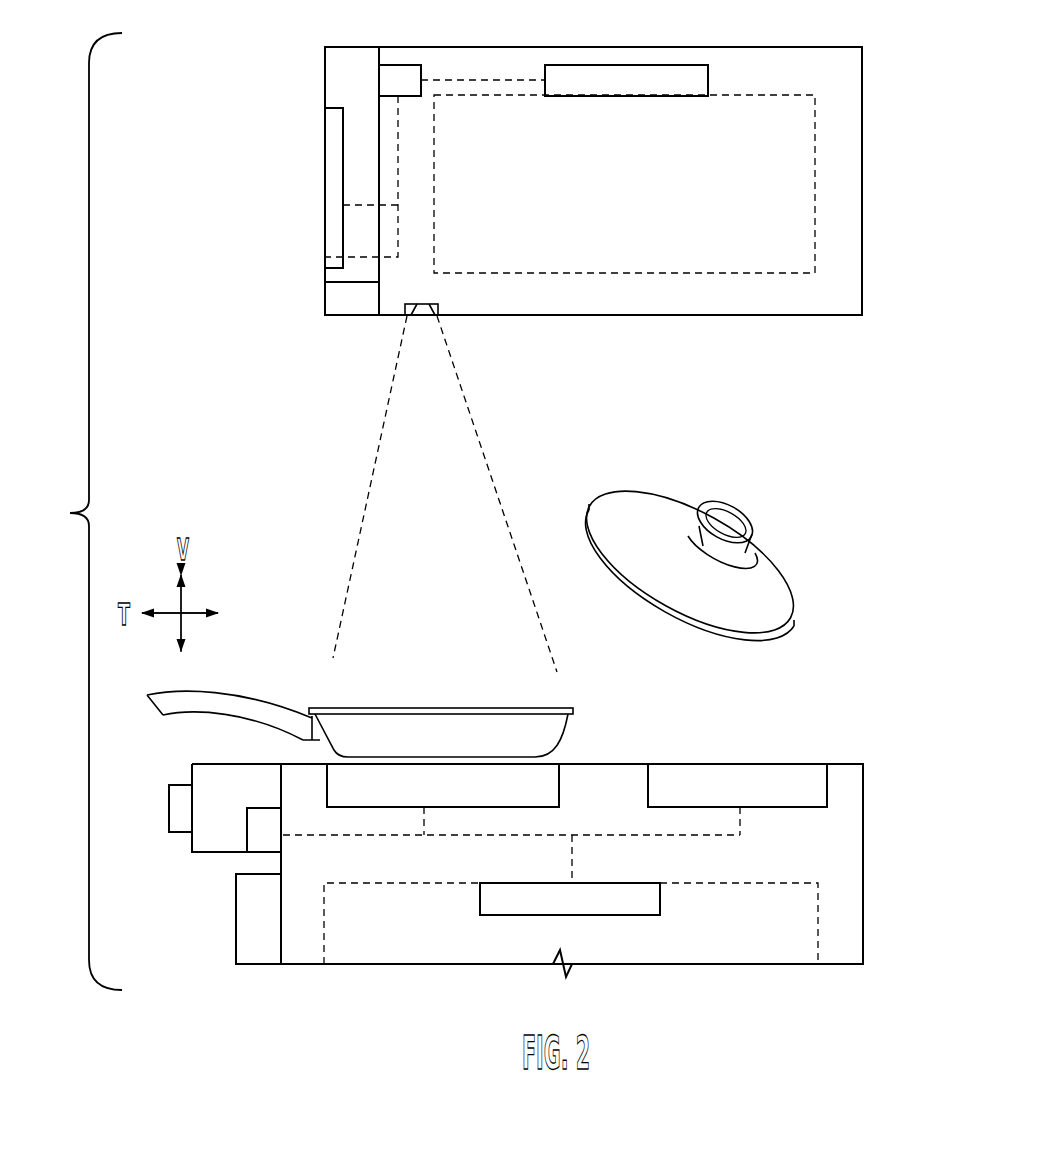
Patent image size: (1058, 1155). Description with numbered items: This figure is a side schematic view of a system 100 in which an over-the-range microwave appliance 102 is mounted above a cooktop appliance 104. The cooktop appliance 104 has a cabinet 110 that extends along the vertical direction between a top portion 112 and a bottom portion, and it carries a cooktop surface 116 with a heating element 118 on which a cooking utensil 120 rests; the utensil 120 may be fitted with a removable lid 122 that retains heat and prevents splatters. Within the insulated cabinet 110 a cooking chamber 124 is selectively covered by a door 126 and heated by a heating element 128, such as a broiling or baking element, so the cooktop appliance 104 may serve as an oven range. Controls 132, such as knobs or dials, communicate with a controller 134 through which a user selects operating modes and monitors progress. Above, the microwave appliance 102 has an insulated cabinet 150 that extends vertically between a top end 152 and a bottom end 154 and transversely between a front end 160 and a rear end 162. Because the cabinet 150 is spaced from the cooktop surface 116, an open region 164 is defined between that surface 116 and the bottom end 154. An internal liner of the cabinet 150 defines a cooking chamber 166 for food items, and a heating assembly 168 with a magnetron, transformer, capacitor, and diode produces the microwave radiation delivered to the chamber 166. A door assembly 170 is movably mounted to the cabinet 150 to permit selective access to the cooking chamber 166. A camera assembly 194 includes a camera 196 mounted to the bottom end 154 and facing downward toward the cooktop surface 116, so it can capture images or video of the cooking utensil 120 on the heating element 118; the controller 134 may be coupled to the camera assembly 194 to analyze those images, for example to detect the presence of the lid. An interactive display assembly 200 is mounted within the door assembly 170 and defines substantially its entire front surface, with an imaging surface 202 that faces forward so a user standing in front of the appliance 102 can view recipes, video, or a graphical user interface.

The system 100 is at (74, 511).
The microwave appliance 102 is at (867, 147).
The cooktop appliance 104 is at (867, 858).
The cabinet 110 is at (850, 938).
The top portion 112 is at (842, 760).
The cooktop surface 116 is at (600, 761).
The heating element 118 is at (751, 773).
The cooking utensil 120 is at (454, 750).
The removable lid 122 is at (686, 574).
The cooking chamber 124 is at (759, 934).
The door 126 is at (252, 920).
The heating element 128 is at (481, 905).
The controls 132 is at (183, 815).
The controller 134 is at (406, 78).
The cabinet 150 is at (814, 308).
The top end 152 is at (747, 44).
The bottom end 154 is at (770, 320).
The front end 160 is at (377, 300).
The rear end 162 is at (868, 291).
The open region 164 is at (554, 527).
The cooking chamber 166 is at (643, 192).
The heating assembly 168 is at (634, 80).
The door assembly 170 is at (337, 65).
The camera assembly 194 is at (441, 300).
The camera 196 is at (420, 305).
The interactive display assembly 200 is at (336, 181).
The imaging surface 202 is at (322, 240).